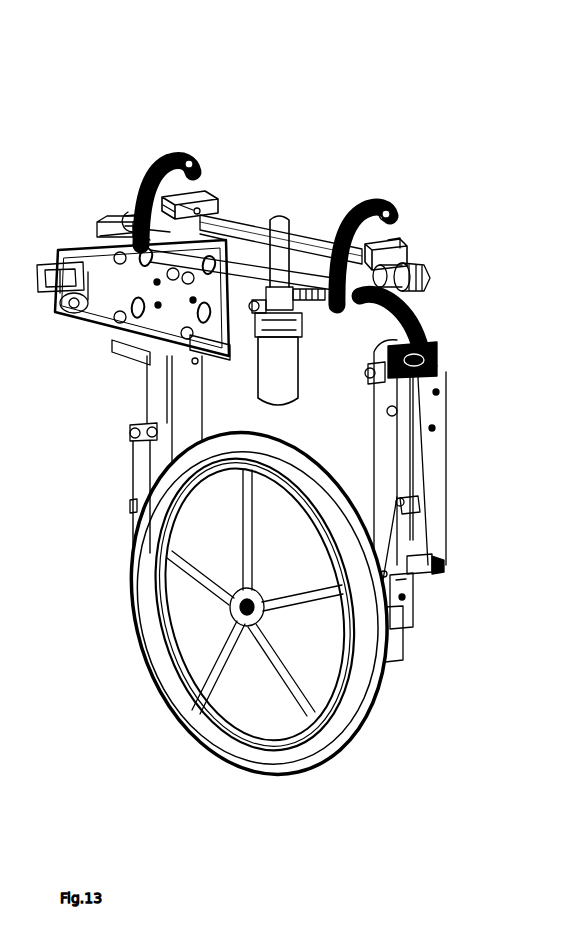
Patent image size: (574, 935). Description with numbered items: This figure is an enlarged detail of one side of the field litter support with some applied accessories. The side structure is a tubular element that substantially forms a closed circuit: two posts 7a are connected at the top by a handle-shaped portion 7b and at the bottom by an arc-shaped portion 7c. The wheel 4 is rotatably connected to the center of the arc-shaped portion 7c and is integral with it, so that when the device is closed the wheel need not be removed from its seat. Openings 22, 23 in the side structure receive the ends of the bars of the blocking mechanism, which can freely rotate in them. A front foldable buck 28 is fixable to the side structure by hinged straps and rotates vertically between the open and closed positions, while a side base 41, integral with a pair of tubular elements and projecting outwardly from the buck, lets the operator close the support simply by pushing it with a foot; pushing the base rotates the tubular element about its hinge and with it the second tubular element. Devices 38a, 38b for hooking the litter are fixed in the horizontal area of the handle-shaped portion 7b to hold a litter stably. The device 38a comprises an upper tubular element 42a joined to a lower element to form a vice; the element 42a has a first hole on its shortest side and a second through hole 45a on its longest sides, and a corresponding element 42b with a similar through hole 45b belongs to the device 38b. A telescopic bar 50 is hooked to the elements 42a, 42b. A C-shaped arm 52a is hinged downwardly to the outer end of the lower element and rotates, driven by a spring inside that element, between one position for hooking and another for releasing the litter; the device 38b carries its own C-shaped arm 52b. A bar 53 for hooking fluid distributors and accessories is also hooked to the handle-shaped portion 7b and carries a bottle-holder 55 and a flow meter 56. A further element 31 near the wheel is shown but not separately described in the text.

The wheel 4 is at (217, 730).
The post 7a is at (188, 400).
The handle-shaped portion 7b is at (393, 320).
The arc-shaped portion 7c is at (200, 540).
The opening 22 is at (397, 410).
The opening 23 is at (190, 362).
The front foldable buck 28 is at (428, 445).
The brake block 31 is at (397, 660).
The device for hooking the litter 38a is at (390, 196).
The device for hooking the litter 38b is at (188, 148).
The side base 41 is at (428, 567).
The upper tubular element 42a is at (397, 240).
The tubular element 42b is at (200, 192).
The second through hole 45a is at (410, 247).
The block 45b is at (203, 190).
The telescopic bar 50 is at (440, 272).
The C-shaped arm 52a is at (362, 203).
The curved arm 52b is at (163, 173).
The bar for hooking fluid distributors and accessories 53 is at (253, 230).
The bottle-holder 55 is at (100, 273).
The flow meter 56 is at (278, 260).